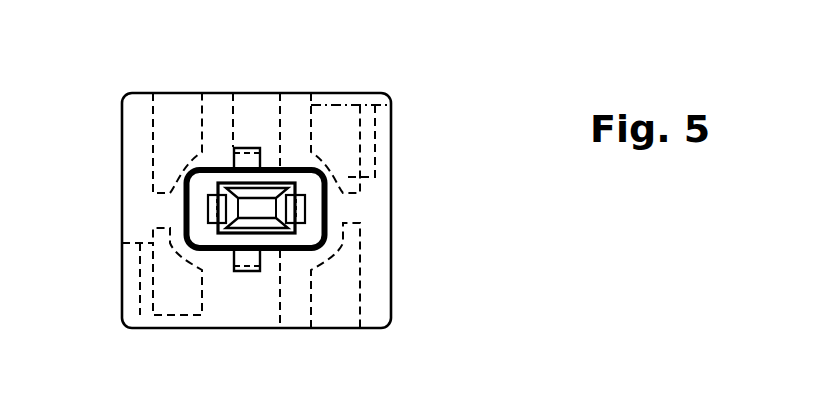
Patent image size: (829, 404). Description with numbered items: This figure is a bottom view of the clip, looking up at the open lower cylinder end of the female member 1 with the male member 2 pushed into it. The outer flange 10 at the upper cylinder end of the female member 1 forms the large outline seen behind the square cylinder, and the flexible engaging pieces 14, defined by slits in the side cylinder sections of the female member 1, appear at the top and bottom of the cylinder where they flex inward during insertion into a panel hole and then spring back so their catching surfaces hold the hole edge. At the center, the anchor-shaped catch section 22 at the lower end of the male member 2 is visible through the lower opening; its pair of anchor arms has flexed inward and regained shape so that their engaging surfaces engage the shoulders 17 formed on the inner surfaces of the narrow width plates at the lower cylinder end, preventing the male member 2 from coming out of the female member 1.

The female member 1 is at (318, 218).
The male member 2 is at (250, 222).
The outer flange 10 is at (378, 305).
The flexible engaging piece 14 is at (245, 148).
The shoulder 17 is at (208, 212).
The anchor-shaped catch section 22 is at (272, 195).